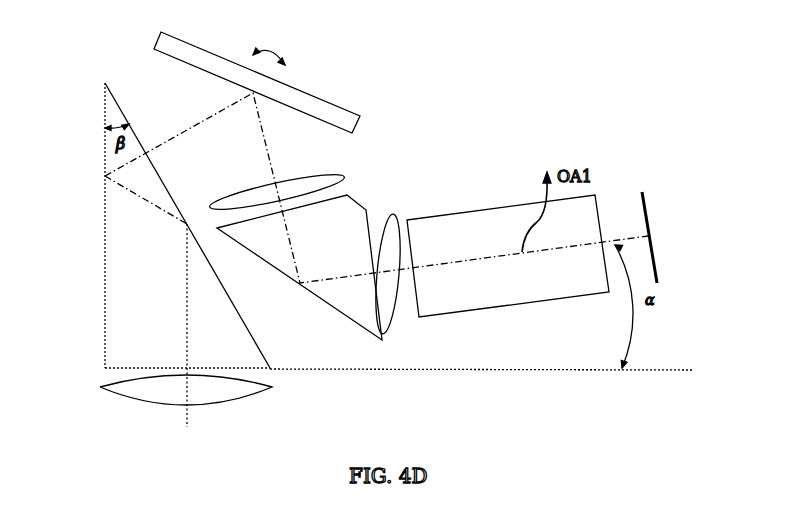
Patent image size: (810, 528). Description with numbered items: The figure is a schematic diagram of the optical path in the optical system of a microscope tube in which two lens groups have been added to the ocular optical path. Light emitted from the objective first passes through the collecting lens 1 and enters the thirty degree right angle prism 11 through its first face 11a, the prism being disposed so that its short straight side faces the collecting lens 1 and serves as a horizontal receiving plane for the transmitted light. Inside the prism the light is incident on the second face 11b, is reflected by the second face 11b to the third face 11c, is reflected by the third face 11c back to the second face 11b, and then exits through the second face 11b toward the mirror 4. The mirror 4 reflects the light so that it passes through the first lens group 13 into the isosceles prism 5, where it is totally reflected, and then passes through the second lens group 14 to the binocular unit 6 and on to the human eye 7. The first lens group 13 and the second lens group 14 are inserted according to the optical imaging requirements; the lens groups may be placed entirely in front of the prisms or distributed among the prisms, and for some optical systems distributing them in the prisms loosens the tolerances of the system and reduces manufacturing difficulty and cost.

The collecting lens 1 is at (100, 388).
The mirror 4 is at (155, 42).
The isosceles prism 5 is at (360, 328).
The binocular unit 6 is at (548, 303).
The human eye 7 is at (657, 276).
The 30 degree right angle prism 11 is at (173, 237).
The first face 11a is at (105, 370).
The second face 11b is at (246, 322).
The third face 11c is at (105, 176).
The first lens group 13 is at (343, 176).
The second lens group 14 is at (383, 214).